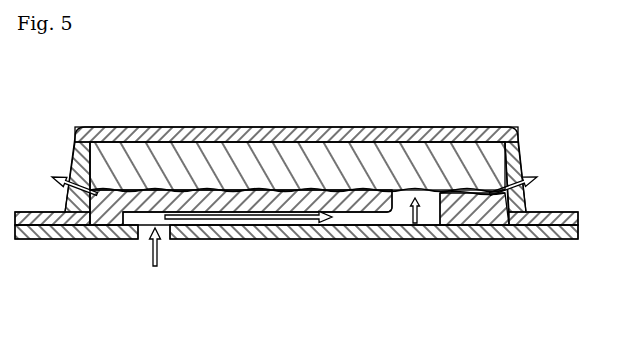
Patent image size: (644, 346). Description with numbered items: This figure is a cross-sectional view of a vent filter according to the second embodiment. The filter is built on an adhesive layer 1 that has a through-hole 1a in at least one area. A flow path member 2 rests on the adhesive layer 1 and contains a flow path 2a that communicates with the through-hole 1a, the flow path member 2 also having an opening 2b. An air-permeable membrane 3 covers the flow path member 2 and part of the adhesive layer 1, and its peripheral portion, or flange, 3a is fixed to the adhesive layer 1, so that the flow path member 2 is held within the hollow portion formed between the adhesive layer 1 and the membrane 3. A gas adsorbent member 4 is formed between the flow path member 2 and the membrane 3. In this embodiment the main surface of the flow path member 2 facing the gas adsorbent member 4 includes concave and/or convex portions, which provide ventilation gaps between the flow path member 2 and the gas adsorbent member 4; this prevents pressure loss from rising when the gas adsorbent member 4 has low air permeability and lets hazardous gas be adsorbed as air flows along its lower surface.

The adhesive layer 1 is at (55, 240).
The through-hole 1a is at (163, 232).
The flow path member 2 is at (106, 215).
The flow path 2a is at (328, 221).
The opening 2b is at (432, 203).
The air-permeable membrane 3 is at (378, 133).
The peripheral portion 3a is at (573, 212).
The gas adsorbent member 4 is at (128, 160).